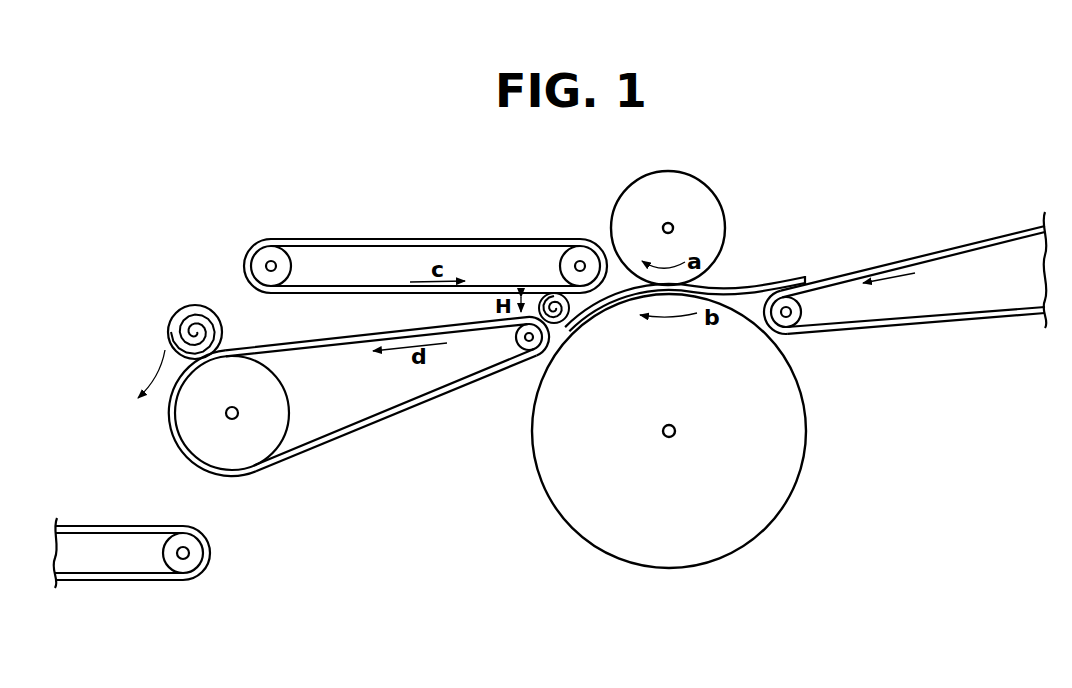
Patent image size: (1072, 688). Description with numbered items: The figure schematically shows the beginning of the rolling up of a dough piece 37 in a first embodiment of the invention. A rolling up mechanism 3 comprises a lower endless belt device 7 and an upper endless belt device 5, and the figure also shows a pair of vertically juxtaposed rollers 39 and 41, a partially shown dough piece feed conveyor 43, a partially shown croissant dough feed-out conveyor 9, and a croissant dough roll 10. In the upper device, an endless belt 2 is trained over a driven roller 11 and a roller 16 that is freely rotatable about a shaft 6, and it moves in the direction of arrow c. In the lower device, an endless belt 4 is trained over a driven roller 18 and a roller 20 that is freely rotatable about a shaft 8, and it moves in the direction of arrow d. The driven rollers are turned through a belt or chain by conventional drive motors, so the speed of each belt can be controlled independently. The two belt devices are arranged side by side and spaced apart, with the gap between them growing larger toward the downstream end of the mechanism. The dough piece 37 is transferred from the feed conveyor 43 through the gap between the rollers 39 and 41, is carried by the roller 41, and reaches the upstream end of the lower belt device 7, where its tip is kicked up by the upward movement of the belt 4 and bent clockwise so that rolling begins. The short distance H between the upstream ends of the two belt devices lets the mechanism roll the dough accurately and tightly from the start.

The endless belt 2 is at (478, 239).
The rolling up mechanism 3 is at (208, 288).
The endless belt 4 is at (359, 429).
The upper endless belt device 5 is at (425, 225).
The shaft 6 is at (580, 261).
The lower endless belt device 7 is at (397, 430).
The shaft 8 is at (527, 351).
The croissant dough feed-out conveyor 9 is at (128, 588).
The croissant dough roll 10 is at (168, 331).
The driven roller 11 is at (273, 248).
The roller 16 is at (563, 258).
The driven roller 18 is at (247, 445).
The roller 20 is at (520, 338).
The dough piece 37 is at (801, 279).
The roller 39 is at (668, 172).
The roller 41 is at (808, 414).
The dough piece feed conveyor 43 is at (905, 247).